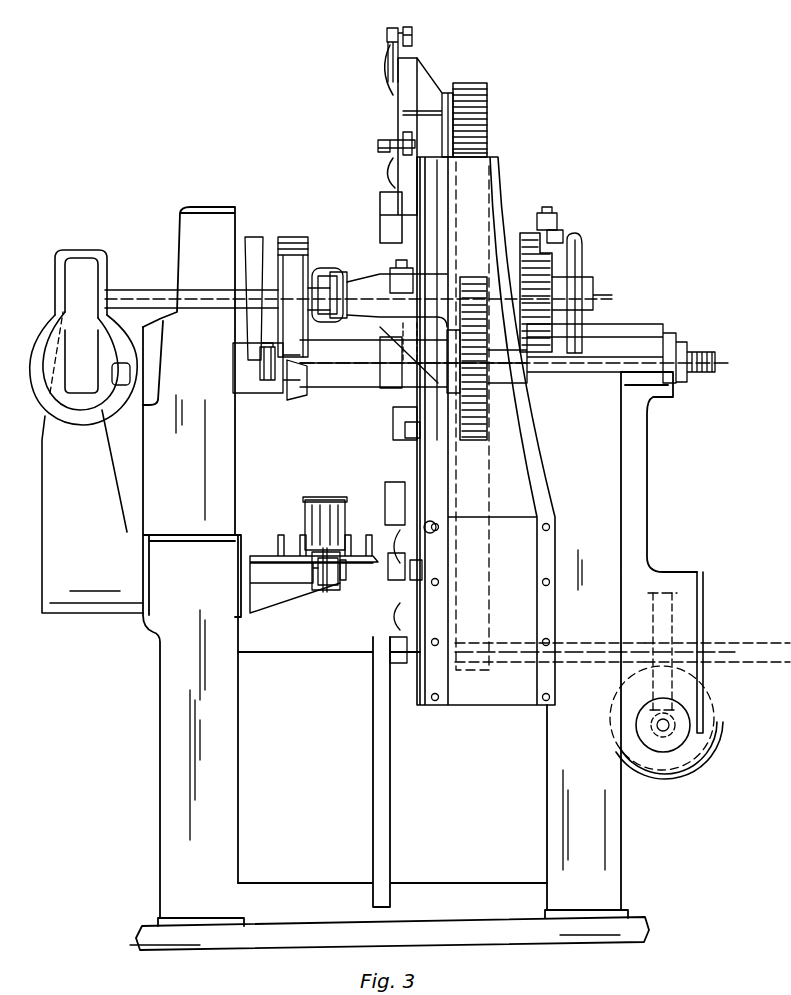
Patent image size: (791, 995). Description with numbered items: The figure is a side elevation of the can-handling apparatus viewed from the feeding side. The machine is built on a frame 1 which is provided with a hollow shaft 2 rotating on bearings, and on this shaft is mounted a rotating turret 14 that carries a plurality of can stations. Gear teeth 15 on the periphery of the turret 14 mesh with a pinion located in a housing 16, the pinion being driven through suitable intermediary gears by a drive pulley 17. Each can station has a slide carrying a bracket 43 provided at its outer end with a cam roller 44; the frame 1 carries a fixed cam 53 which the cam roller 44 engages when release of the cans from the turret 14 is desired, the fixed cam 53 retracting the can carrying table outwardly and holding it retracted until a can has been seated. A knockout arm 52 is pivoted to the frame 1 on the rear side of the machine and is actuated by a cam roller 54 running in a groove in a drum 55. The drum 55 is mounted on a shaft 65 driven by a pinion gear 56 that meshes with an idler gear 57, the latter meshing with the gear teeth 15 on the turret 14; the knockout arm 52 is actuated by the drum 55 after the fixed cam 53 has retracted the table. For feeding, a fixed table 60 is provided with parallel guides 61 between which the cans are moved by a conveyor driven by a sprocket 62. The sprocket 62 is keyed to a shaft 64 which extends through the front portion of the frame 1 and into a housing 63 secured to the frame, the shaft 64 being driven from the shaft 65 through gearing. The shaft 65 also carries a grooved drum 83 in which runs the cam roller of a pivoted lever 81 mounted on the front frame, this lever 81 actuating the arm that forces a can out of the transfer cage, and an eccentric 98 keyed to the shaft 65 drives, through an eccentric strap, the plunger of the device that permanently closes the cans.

The frame 1 is at (192, 808).
The hollow shaft 2 is at (694, 362).
The rotating turret 14 is at (478, 143).
The gear teeth 15 is at (470, 90).
The housing 16 is at (680, 602).
The drive pulley 17 is at (657, 762).
The bracket 43 is at (395, 63).
The cam roller 44 is at (412, 30).
The knockout arm 52 is at (558, 222).
The fixed cam 53 is at (417, 453).
The cam roller 54 is at (563, 238).
The drum 55 is at (578, 272).
The pinion gear 56 is at (478, 265).
The gear 57 is at (480, 427).
The fixed table 60 is at (277, 556).
The parallel guides 61 is at (346, 533).
The sprocket 62 is at (338, 588).
The housing 63 is at (95, 587).
The shaft 64 is at (343, 573).
The shaft 65 is at (137, 303).
The pivoted lever 81 is at (277, 382).
The drum 83 is at (296, 254).
The eccentric 98 is at (336, 274).